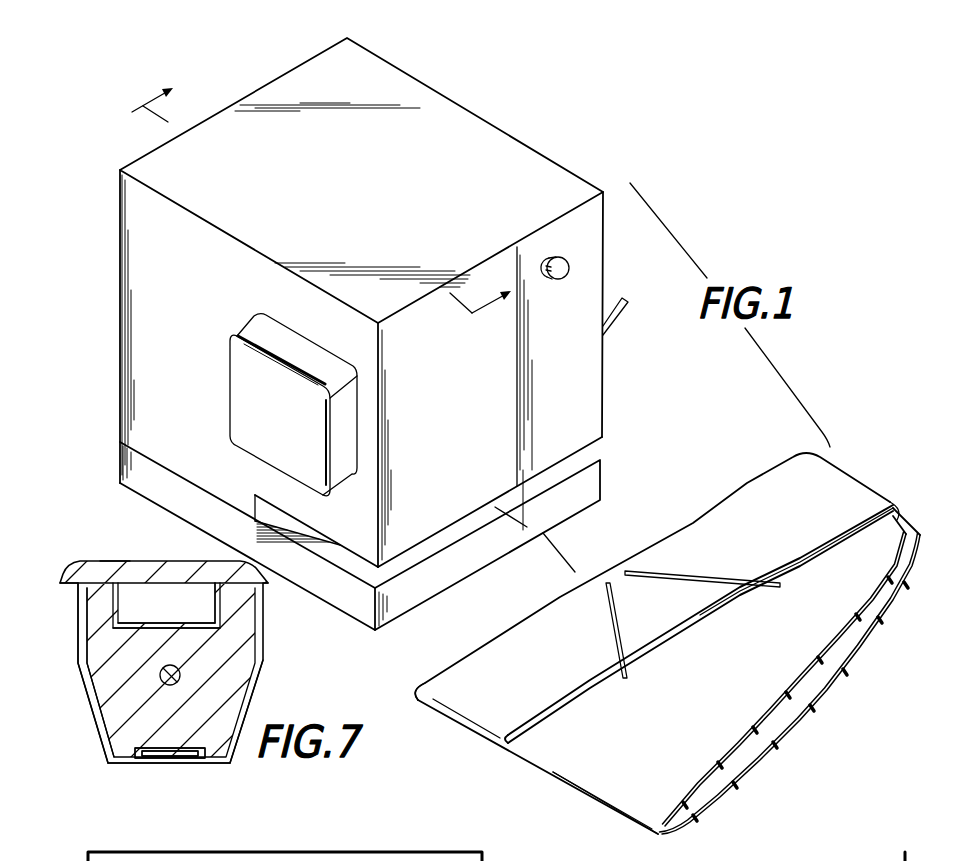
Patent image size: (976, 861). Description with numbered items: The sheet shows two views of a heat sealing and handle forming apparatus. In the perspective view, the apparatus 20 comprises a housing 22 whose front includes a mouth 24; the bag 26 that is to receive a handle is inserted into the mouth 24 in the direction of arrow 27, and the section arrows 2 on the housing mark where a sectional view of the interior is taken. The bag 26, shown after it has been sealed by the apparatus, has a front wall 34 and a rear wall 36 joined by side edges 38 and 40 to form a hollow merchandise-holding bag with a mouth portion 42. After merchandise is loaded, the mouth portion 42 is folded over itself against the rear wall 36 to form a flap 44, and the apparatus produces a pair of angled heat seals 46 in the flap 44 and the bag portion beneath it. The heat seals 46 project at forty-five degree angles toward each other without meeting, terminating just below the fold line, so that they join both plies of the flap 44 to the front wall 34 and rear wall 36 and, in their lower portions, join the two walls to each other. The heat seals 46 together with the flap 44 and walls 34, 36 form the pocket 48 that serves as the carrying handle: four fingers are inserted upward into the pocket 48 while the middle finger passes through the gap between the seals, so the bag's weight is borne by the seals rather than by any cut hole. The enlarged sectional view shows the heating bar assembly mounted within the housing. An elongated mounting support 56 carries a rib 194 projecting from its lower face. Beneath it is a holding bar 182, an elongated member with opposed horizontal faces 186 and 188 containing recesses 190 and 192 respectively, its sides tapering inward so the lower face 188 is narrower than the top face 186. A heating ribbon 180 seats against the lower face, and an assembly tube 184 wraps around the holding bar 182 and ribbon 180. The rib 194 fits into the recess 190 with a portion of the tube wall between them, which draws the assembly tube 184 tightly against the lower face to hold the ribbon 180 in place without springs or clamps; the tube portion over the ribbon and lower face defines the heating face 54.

In FIG. 1, the heat sealing and handle forming apparatus 20 is at (392, 322).
In FIG. 1, the housing 22 is at (500, 152).
In FIG. 1, the mouth 24 is at (601, 452).
In FIG. 1, the arrow 27 is at (546, 555).
In FIG. 1, the section line 2 is at (306, 213).
In FIG. 1, the bag 26 is at (667, 626).
In FIG. 1, the side edge 40 is at (899, 510).
In FIG. 1, the front wall 34 is at (800, 698).
In FIG. 1, the rear wall 36 is at (737, 737).
In FIG. 1, the side edge 38 is at (612, 810).
In FIG. 1, the flap 44 is at (477, 712).
In FIG. 1, the mouth portion 42 is at (578, 697).
In FIG. 1, the pocket 48 is at (720, 612).
In FIG. 1, the heat seals 46 is at (687, 583).
In FIG. 7, the mounting support 56 is at (119, 565).
In FIG. 7, the rib 194 is at (155, 627).
In FIG. 7, the top face 186 is at (242, 595).
In FIG. 7, the recess 190 is at (193, 628).
In FIG. 7, the lower face 188 is at (245, 717).
In FIG. 7, the assembly tube 184 is at (90, 718).
In FIG. 7, the holding bar 182 is at (118, 730).
In FIG. 7, the heating face 54 is at (147, 768).
In FIG. 7, the heating ribbon 180 is at (185, 760).
In FIG. 7, the recess 192 is at (167, 757).